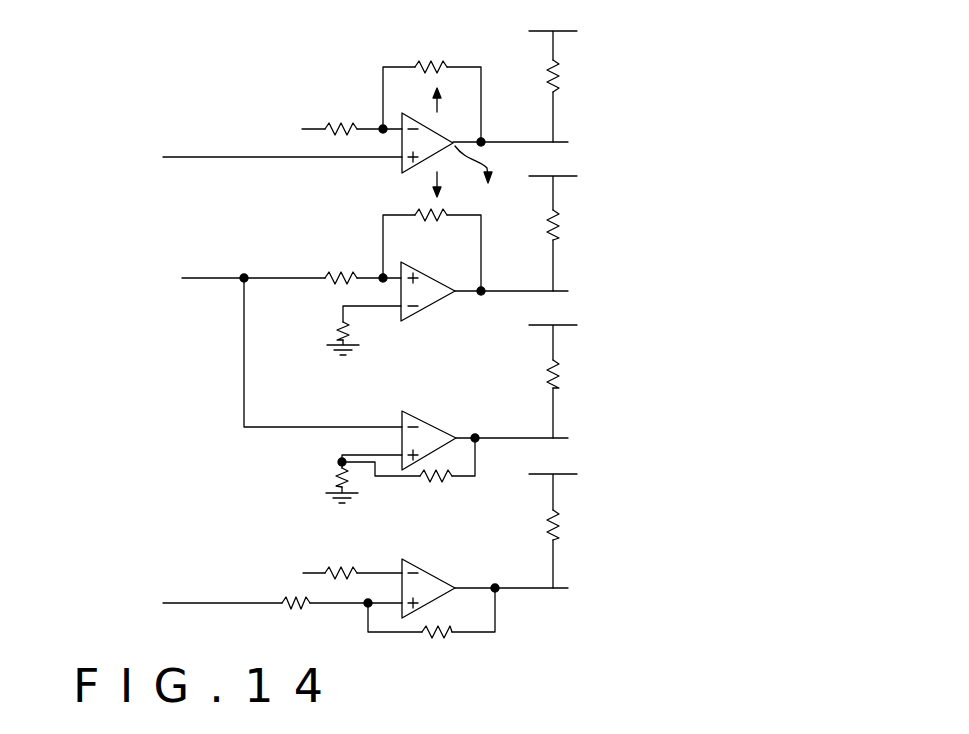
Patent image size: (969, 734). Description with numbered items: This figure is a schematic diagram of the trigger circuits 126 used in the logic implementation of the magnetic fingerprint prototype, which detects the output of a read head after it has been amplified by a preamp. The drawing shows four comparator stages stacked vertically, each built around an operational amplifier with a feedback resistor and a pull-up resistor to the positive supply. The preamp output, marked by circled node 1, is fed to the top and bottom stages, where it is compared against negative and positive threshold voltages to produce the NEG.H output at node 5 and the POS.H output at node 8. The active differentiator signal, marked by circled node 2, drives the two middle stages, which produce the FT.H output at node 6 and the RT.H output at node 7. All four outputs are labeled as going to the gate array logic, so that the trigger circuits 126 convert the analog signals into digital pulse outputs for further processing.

The trigger circuits 126 is at (203, 358).
The preamp output signal node 1 is at (233, 156).
The active differentiator signal node 2 is at (206, 269).
The NEG.H output (to GAL) 5 is at (619, 118).
The FT.H output (to GAL) 6 is at (612, 268).
The RT.H output (to GAL) 7 is at (614, 415).
The POS.H output (to GAL) 8 is at (618, 566).